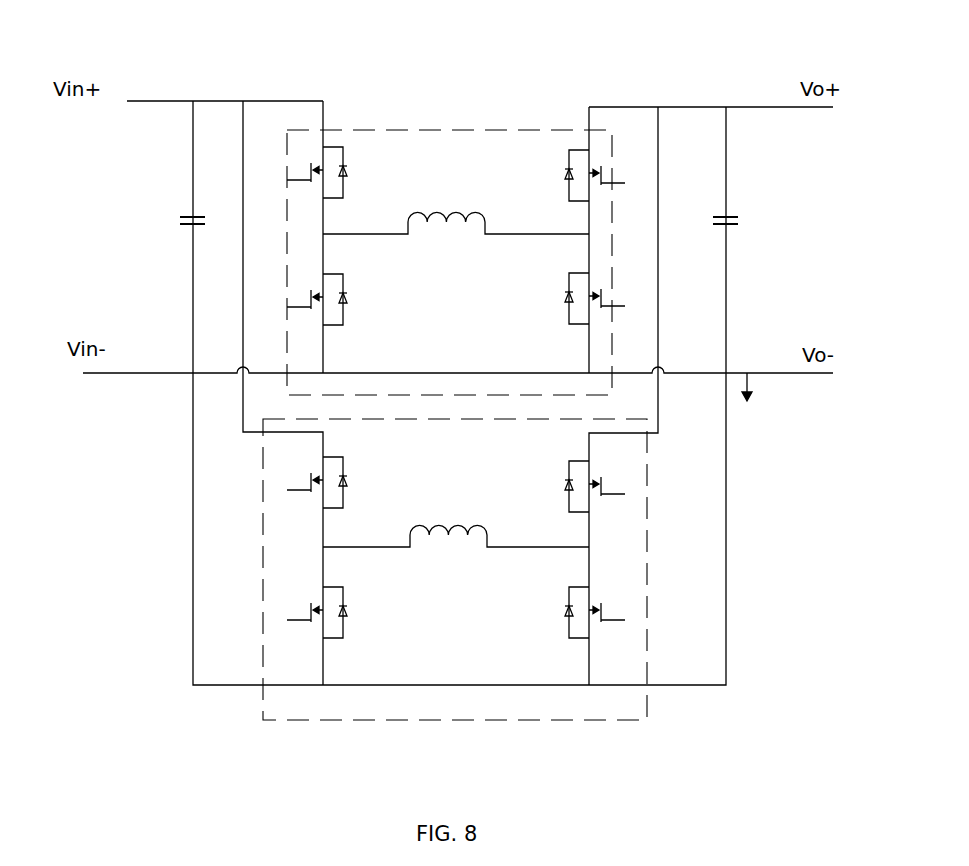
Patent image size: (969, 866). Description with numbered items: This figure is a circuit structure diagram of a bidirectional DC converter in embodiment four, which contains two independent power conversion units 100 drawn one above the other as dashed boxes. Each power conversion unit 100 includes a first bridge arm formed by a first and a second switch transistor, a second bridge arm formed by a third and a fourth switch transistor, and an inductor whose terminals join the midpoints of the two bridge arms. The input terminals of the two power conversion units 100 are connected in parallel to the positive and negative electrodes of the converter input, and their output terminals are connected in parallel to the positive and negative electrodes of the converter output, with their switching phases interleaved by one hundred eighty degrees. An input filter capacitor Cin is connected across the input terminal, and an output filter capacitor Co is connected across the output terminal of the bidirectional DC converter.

The power conversion unit 100 is at (391, 129).
The input filter capacitor Cin is at (206, 234).
The output filter capacitor Co is at (707, 234).